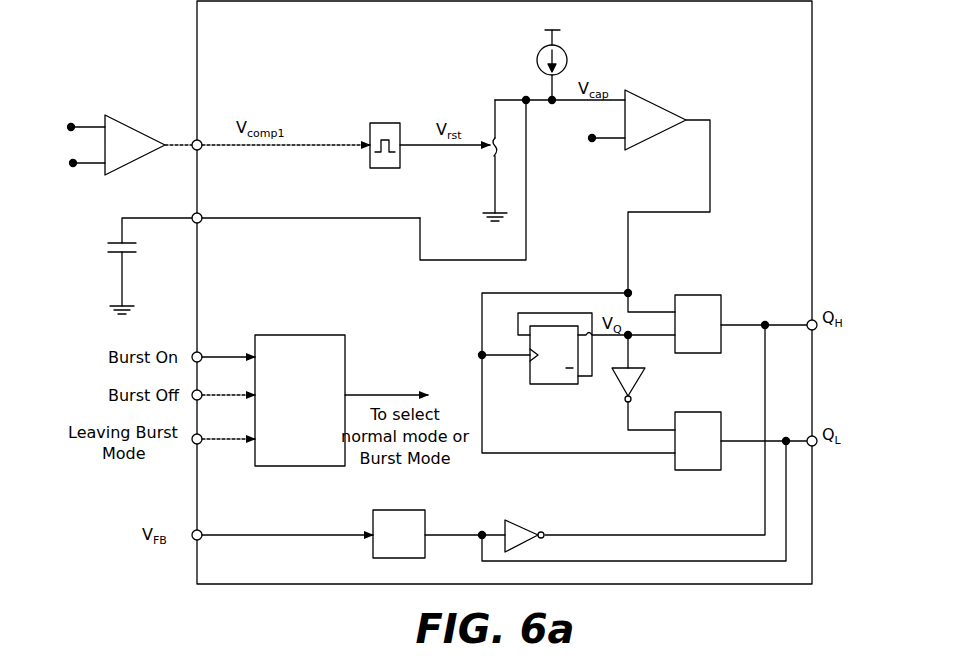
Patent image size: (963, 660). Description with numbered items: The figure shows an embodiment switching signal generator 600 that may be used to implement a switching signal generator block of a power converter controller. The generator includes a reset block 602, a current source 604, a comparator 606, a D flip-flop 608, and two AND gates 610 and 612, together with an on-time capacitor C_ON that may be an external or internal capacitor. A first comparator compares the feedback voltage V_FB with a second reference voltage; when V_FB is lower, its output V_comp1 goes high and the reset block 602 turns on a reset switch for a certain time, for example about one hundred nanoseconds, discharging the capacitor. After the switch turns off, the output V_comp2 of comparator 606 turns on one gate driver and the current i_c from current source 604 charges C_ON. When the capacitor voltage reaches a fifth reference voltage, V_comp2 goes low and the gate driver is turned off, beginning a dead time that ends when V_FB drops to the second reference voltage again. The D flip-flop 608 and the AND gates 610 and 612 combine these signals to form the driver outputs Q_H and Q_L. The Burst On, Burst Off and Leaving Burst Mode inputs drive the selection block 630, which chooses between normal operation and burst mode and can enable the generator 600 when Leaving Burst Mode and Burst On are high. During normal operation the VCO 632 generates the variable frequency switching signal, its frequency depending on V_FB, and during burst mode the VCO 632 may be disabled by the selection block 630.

The switching signal generator 600 is at (197, 47).
The reset block 602 is at (382, 123).
The current source 604 is at (566, 50).
The comparator 606 is at (654, 106).
The D flip-flop 608 is at (555, 384).
The AND gate 610 is at (710, 353).
The AND gate 612 is at (673, 464).
The selection block 630 is at (288, 335).
The VCO 632 is at (388, 510).